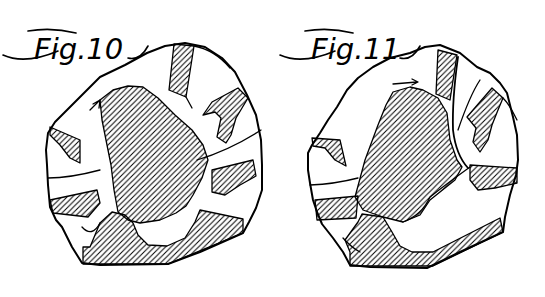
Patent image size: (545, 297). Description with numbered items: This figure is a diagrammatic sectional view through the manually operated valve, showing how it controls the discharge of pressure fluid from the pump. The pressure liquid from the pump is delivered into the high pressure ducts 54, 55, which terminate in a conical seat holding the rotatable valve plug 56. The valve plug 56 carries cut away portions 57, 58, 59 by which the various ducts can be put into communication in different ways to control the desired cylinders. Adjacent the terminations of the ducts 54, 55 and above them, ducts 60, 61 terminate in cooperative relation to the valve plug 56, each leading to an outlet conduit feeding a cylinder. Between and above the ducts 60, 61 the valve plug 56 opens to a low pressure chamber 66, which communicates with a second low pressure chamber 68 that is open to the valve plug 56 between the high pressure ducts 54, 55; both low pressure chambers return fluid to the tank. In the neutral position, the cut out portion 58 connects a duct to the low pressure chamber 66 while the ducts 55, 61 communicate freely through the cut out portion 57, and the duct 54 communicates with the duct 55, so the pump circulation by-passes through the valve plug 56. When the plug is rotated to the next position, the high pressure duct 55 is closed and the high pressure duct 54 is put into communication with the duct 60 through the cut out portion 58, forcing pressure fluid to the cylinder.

In FIG. 10, the duct 54 is at (245, 120).
In FIG. 11, the duct 54 is at (524, 99).
In FIG. 10, the duct 55 is at (82, 227).
In FIG. 11, the duct 55 is at (337, 232).
In FIG. 10, the valve plug 56 is at (133, 144).
In FIG. 11, the valve plug 56 is at (380, 173).
In FIG. 10, the cut away portion 57 is at (102, 172).
In FIG. 11, the cut away portion 57 is at (361, 142).
In FIG. 10, the cut away portion 58 is at (174, 103).
In FIG. 11, the cut away portion 58 is at (496, 77).
In FIG. 10, the cut away portion 59 is at (248, 138).
In FIG. 11, the cut away portion 59 is at (443, 202).
In FIG. 10, the duct 60 is at (205, 67).
In FIG. 11, the duct 60 is at (468, 73).
In FIG. 10, the duct 61 is at (55, 160).
In FIG. 11, the duct 61 is at (320, 170).
In FIG. 10, the low pressure chamber 66 is at (153, 70).
In FIG. 11, the low pressure chamber 66 is at (362, 98).
In FIG. 10, the low pressure chamber 68 is at (167, 230).
In FIG. 11, the low pressure chamber 68 is at (430, 235).